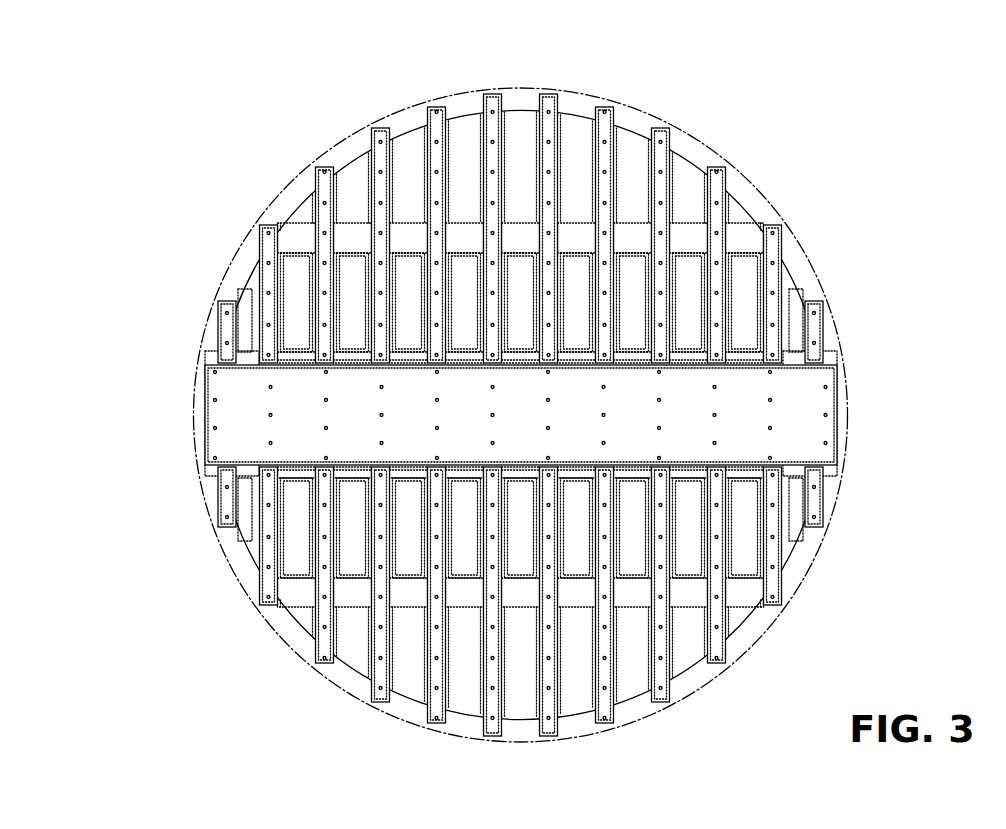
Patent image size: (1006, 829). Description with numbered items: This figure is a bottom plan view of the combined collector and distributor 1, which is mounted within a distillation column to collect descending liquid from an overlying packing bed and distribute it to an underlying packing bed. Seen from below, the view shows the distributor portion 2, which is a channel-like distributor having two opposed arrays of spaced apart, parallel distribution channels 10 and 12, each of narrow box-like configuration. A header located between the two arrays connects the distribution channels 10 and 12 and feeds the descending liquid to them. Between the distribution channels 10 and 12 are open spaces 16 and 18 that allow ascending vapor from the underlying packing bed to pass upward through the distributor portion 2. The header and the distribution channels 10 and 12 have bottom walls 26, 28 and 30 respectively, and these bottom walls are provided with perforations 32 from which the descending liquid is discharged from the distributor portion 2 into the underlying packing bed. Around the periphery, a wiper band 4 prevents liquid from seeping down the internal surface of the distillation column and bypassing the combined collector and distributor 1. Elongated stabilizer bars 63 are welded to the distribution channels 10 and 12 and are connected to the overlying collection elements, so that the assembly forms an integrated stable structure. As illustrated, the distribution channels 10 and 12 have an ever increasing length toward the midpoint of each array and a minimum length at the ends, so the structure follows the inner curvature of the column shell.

The combined collector and distributor 1 is at (153, 259).
The distributor portion 2 is at (184, 425).
The wiper band 4 is at (856, 345).
The distribution channels 10 is at (227, 300).
The distribution channels 12 is at (229, 529).
The open spaces 16 is at (759, 313).
The open spaces 18 is at (759, 543).
The bottom wall 26 is at (828, 428).
The bottom walls 28 is at (272, 248).
The bottom walls 30 is at (225, 504).
The perforations 32 is at (353, 233).
The stabilizer bars 63 is at (377, 162).